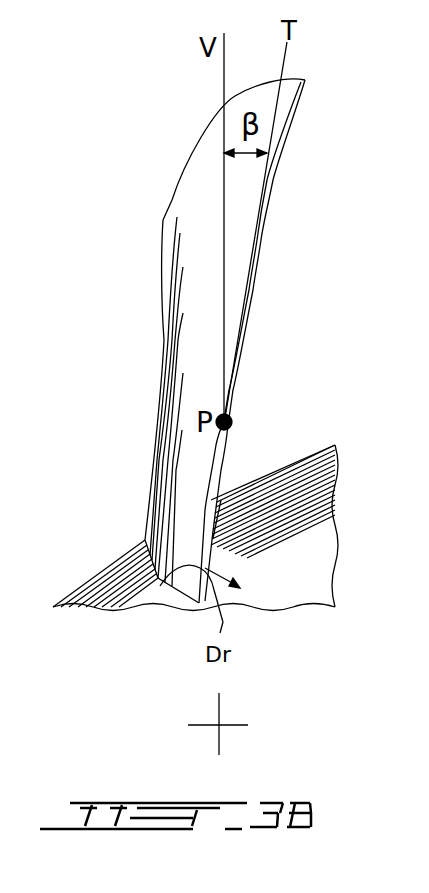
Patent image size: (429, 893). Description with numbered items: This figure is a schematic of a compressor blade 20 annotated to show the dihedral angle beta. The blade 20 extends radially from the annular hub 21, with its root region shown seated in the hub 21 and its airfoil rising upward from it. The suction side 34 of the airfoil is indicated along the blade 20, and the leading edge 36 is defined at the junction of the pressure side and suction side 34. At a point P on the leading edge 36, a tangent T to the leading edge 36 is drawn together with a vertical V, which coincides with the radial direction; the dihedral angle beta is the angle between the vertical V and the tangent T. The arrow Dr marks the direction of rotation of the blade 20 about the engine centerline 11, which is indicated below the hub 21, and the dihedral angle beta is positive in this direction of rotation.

The blade 20 is at (182, 300).
The suction side 34 is at (197, 352).
The annular hub 21 is at (112, 583).
The leading edge 36 is at (214, 533).
The centerline 11 is at (219, 725).